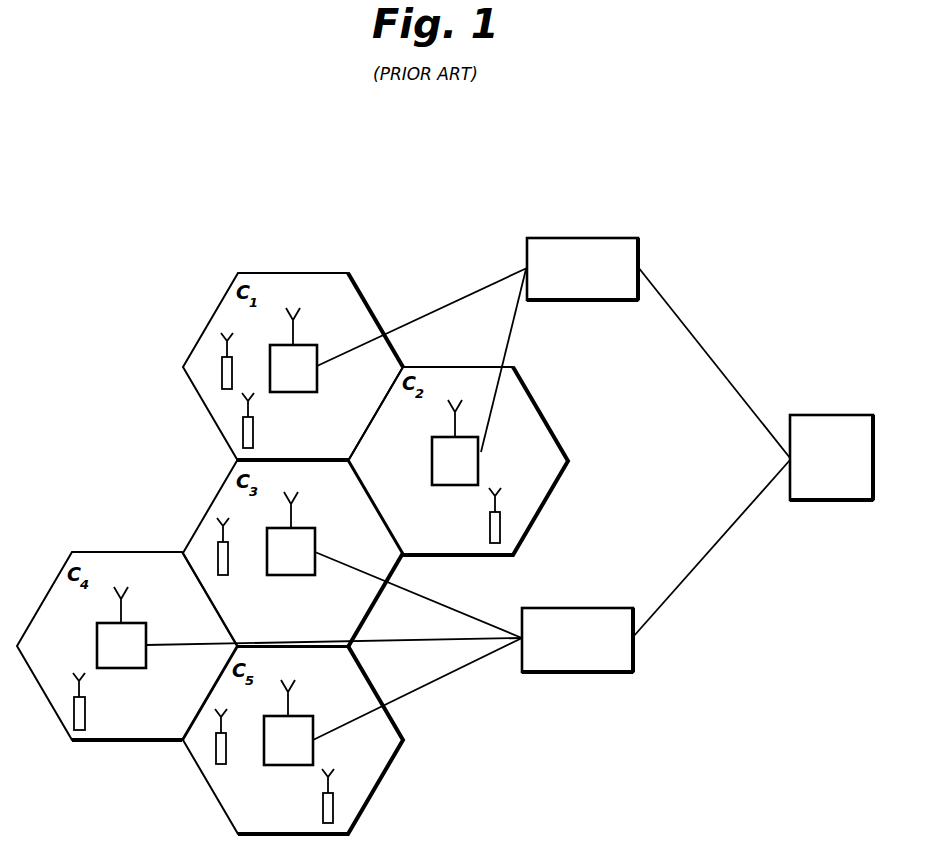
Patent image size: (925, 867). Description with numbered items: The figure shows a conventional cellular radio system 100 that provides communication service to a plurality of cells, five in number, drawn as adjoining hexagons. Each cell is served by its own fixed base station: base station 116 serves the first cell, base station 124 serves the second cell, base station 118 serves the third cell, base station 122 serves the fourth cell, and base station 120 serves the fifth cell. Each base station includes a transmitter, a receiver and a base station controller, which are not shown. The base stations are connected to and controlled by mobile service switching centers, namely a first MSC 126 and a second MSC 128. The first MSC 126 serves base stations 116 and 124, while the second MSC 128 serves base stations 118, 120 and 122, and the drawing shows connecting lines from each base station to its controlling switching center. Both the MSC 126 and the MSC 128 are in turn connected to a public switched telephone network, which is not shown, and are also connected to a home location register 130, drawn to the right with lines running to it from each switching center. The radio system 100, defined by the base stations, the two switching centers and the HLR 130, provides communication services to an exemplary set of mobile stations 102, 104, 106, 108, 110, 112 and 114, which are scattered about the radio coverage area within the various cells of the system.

The cellular radio system 100 is at (191, 163).
The mobile station 102 is at (85, 710).
The mobile station 104 is at (216, 745).
The mobile station 106 is at (323, 807).
The mobile station 108 is at (228, 557).
The mobile station 110 is at (222, 369).
The mobile station 112 is at (490, 527).
The mobile station 114 is at (253, 430).
The base station 116 is at (317, 376).
The base station 118 is at (302, 528).
The base station 120 is at (298, 716).
The base station 122 is at (97, 645).
The base station 124 is at (432, 460).
The mobile service switching center 126 is at (583, 238).
The mobile service switching center 128 is at (572, 672).
The home location register 130 is at (833, 415).